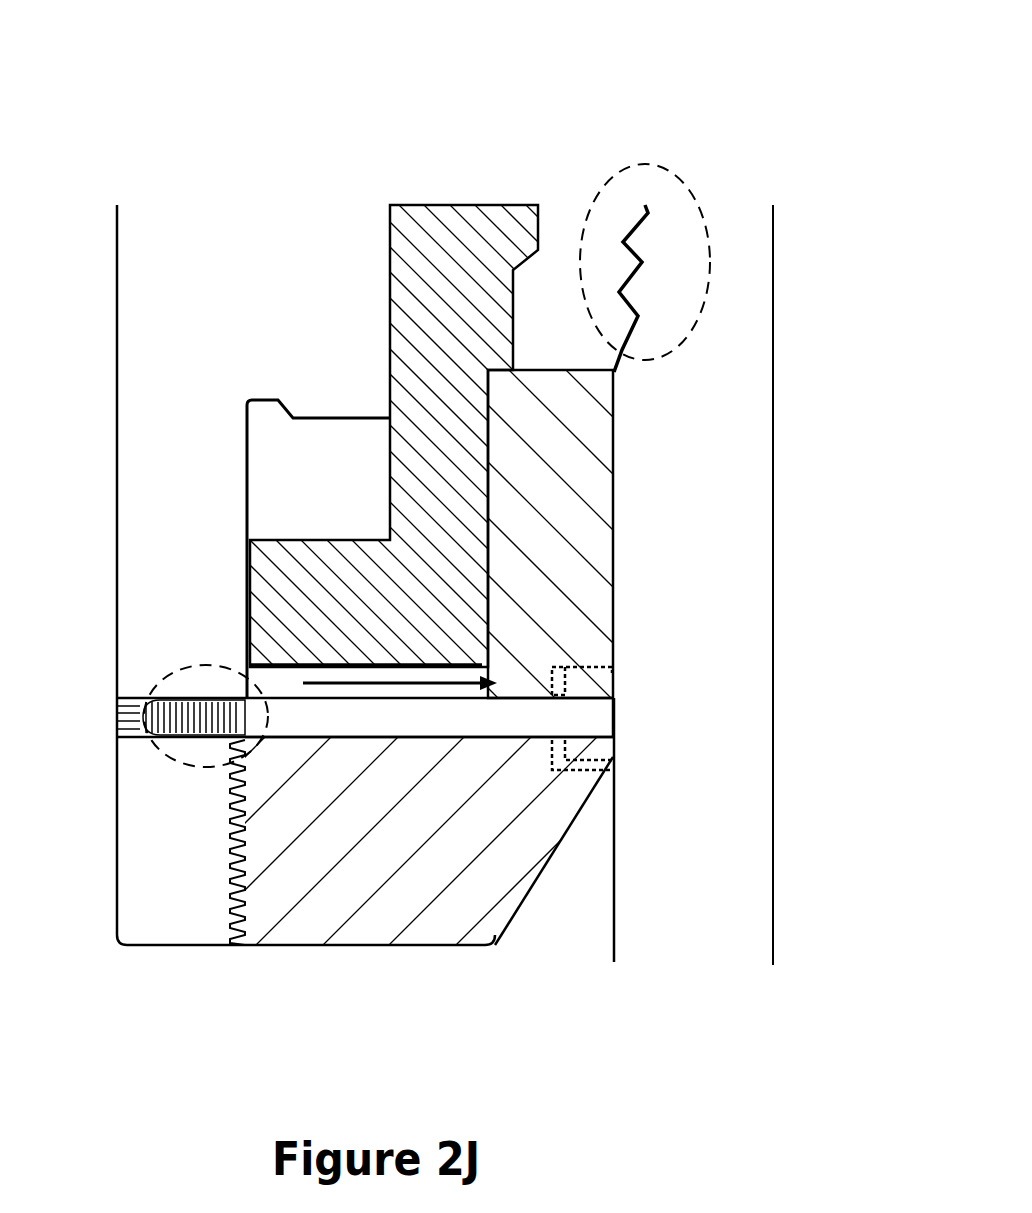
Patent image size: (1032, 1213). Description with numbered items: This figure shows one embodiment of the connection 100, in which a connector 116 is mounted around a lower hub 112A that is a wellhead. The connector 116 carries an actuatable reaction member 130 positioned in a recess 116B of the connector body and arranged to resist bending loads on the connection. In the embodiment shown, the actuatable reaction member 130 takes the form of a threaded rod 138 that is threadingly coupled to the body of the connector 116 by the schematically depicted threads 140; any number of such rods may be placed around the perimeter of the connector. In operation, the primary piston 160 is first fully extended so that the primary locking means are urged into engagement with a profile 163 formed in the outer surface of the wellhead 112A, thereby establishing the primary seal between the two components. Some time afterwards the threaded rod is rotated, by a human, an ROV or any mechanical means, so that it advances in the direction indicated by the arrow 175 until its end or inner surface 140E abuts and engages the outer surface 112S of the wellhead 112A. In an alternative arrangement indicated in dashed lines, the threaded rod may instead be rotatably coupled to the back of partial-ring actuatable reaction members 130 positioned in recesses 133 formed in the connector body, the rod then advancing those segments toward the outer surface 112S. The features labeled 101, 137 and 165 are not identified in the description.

The connection 100 is at (620, 110).
The clamp body 101 is at (550, 255).
The lower hub 112A is at (700, 490).
The outer surface 112S is at (615, 925).
The connector 116 is at (230, 305).
The recess 116B is at (365, 738).
The actuatable reaction member 130 is at (590, 667).
The recess 133 is at (550, 667).
The threaded body 137 is at (278, 905).
The threaded rod 138 is at (470, 710).
The threads 140 is at (182, 760).
The end or inner surface of the threaded rod 140E is at (615, 715).
The primary piston 160 is at (418, 357).
The profile 163 is at (640, 262).
The spring detail region 165 is at (676, 170).
The arrow 175 is at (385, 682).